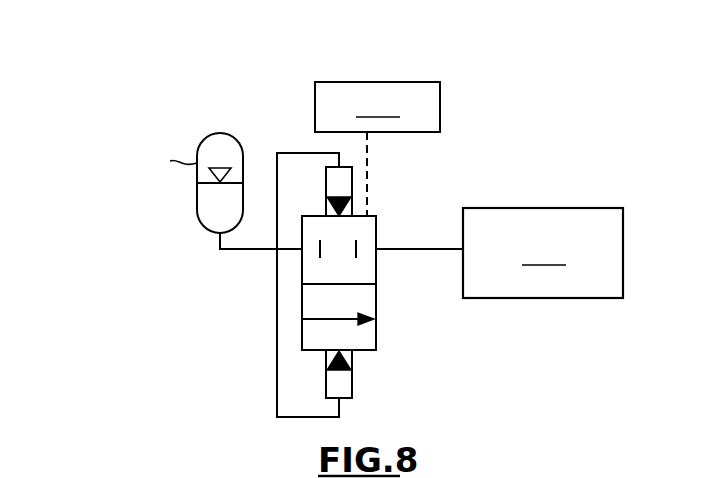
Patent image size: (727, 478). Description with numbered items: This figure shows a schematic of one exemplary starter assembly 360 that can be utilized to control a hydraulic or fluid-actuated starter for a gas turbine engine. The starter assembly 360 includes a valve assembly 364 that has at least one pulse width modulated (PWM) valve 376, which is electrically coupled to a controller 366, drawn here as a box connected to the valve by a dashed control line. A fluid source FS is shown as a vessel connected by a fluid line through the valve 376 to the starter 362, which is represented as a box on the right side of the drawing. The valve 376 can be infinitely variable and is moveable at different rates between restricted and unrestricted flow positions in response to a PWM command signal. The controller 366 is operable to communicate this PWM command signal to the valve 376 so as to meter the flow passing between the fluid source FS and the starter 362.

The starter assembly 360 is at (128, 80).
The valve assembly 364 is at (250, 120).
The controller 366 is at (377, 149).
The starter 362 is at (499, 253).
The pulse width modulated (PWM) valve 376 is at (376, 335).